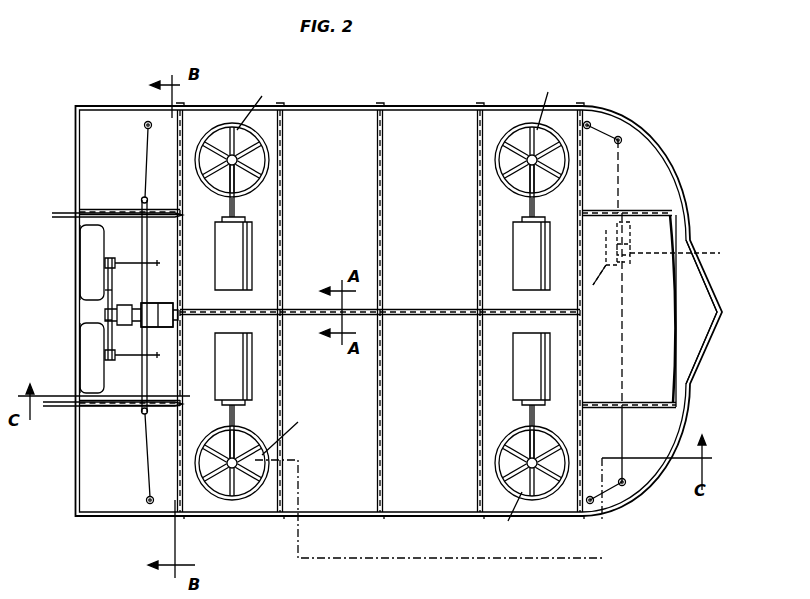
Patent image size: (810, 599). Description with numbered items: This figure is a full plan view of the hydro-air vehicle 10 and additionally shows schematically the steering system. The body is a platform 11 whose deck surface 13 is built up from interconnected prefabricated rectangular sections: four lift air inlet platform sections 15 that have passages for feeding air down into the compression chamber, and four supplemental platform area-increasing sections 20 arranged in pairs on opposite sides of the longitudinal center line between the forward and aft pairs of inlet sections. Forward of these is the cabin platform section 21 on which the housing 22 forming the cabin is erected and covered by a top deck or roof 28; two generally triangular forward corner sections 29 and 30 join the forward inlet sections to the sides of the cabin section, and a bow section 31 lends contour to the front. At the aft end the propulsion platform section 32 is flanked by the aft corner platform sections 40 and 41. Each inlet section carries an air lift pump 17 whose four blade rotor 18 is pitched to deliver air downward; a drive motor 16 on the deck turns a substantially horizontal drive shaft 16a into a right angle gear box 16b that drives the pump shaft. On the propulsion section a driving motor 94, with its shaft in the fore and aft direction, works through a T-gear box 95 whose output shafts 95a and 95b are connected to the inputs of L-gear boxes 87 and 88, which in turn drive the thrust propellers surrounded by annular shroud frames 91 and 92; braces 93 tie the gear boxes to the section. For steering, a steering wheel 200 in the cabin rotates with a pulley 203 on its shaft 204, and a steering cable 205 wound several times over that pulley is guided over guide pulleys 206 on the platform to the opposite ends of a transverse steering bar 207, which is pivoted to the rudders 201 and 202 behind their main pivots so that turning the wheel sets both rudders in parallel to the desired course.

The hydro-air vehicle 10 is at (443, 109).
The platform 11 is at (340, 117).
The deck surface 13 is at (466, 122).
The lift air inlet platform section 15 is at (210, 114).
The drive motor 16 is at (252, 248).
The drive shaft 16a is at (229, 210).
The right angle gear box 16b is at (400, 305).
The air lift pump 17 is at (196, 161).
The four blade rotor 18 is at (270, 170).
The supplemental platform area-increasing section 20 is at (300, 118).
The cabin platform section 21 is at (668, 410).
The housing 22 is at (665, 250).
The top deck or roof 28 is at (629, 309).
The forward corner section 29 is at (636, 472).
The forward corner section 30 is at (640, 152).
The bow section 31 is at (701, 312).
The propulsion platform section 32 is at (162, 378).
The platform section 40 is at (100, 452).
The platform section 41 is at (95, 173).
The L-gear box 87 is at (100, 252).
The L-gear box 88 is at (106, 357).
The annular shroud frame 91 is at (86, 265).
The annular shroud frame 92 is at (86, 355).
The braces 93 is at (112, 258).
The driving motor 94 is at (160, 302).
The T-gear box 95 is at (106, 314).
The output shaft 95a is at (106, 290).
The output shaft 95b is at (108, 332).
The steering wheel 200 is at (605, 284).
The rudder 201 is at (58, 216).
The rudder 202 is at (58, 408).
The pulley 203 is at (688, 256).
The shaft 204 is at (628, 270).
The steering cable 205 is at (625, 174).
The guide pulleys 206 is at (146, 122).
The transverse steering bar 207 is at (142, 203).